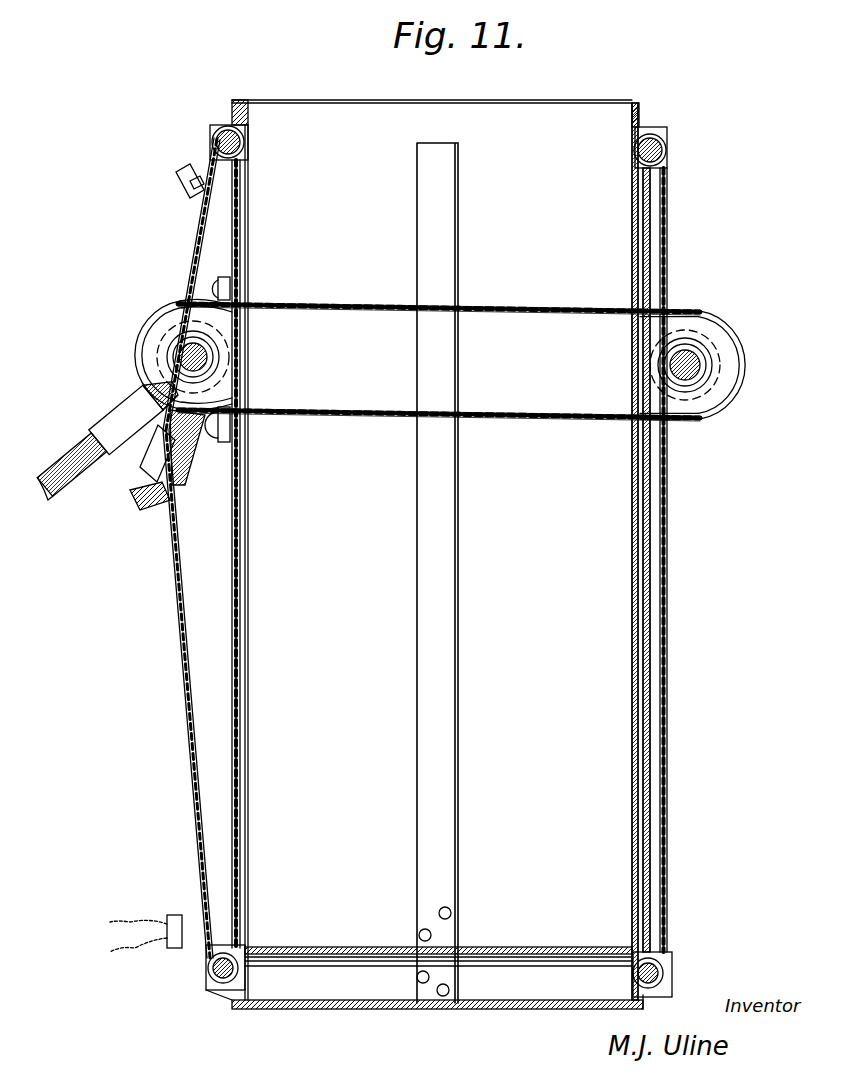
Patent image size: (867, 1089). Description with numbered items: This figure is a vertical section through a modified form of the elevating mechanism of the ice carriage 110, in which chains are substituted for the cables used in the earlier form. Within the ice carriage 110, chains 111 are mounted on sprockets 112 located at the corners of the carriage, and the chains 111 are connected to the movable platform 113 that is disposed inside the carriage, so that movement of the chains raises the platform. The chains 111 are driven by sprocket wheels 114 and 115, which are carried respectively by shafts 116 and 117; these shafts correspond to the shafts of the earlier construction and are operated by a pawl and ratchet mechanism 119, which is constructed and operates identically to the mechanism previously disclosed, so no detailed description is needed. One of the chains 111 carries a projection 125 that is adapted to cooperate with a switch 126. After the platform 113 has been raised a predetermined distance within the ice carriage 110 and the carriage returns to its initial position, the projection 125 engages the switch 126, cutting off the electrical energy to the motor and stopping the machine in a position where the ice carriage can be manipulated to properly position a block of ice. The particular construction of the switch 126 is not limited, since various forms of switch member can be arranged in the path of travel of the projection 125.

The ice carriage 110 is at (439, 554).
The chains 111 is at (185, 701).
The sprockets 112 is at (210, 975).
The movable platform 113 is at (327, 945).
The sprocket wheel 114 is at (226, 356).
The sprocket wheel 115 is at (712, 372).
The shaft 116 is at (196, 352).
The shaft 117 is at (695, 352).
The pawl and ratchet mechanism 119 is at (116, 408).
The projection 125 is at (182, 176).
The switch 126 is at (172, 915).